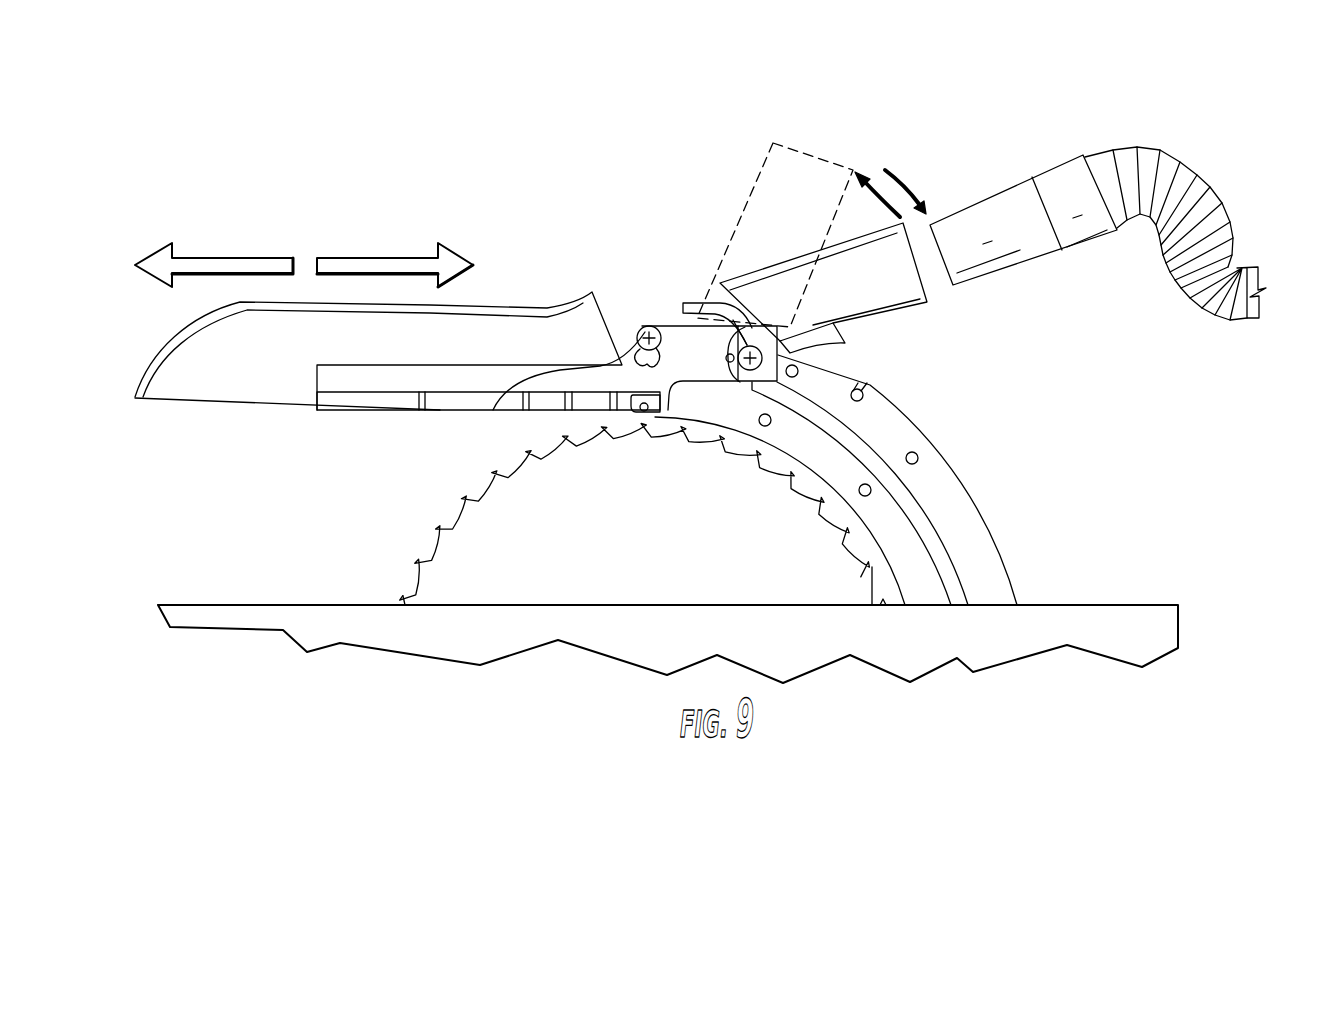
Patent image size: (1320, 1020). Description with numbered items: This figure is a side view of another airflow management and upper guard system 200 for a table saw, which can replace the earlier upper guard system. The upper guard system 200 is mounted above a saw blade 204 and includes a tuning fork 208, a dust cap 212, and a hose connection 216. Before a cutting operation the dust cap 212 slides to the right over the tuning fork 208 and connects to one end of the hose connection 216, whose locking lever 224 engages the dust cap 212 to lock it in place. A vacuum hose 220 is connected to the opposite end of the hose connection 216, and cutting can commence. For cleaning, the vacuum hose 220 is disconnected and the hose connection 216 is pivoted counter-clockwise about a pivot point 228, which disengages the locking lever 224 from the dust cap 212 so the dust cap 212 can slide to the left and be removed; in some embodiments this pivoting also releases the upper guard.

The airflow management and upper guard system 200 is at (542, 238).
The saw blade 204 is at (695, 543).
The tuning fork 208 is at (557, 383).
The dust cap 212 is at (218, 380).
The hose connection 216 is at (823, 290).
The vacuum hose 220 is at (1148, 167).
The locking lever 224 is at (683, 305).
The pivot point 228 is at (760, 360).